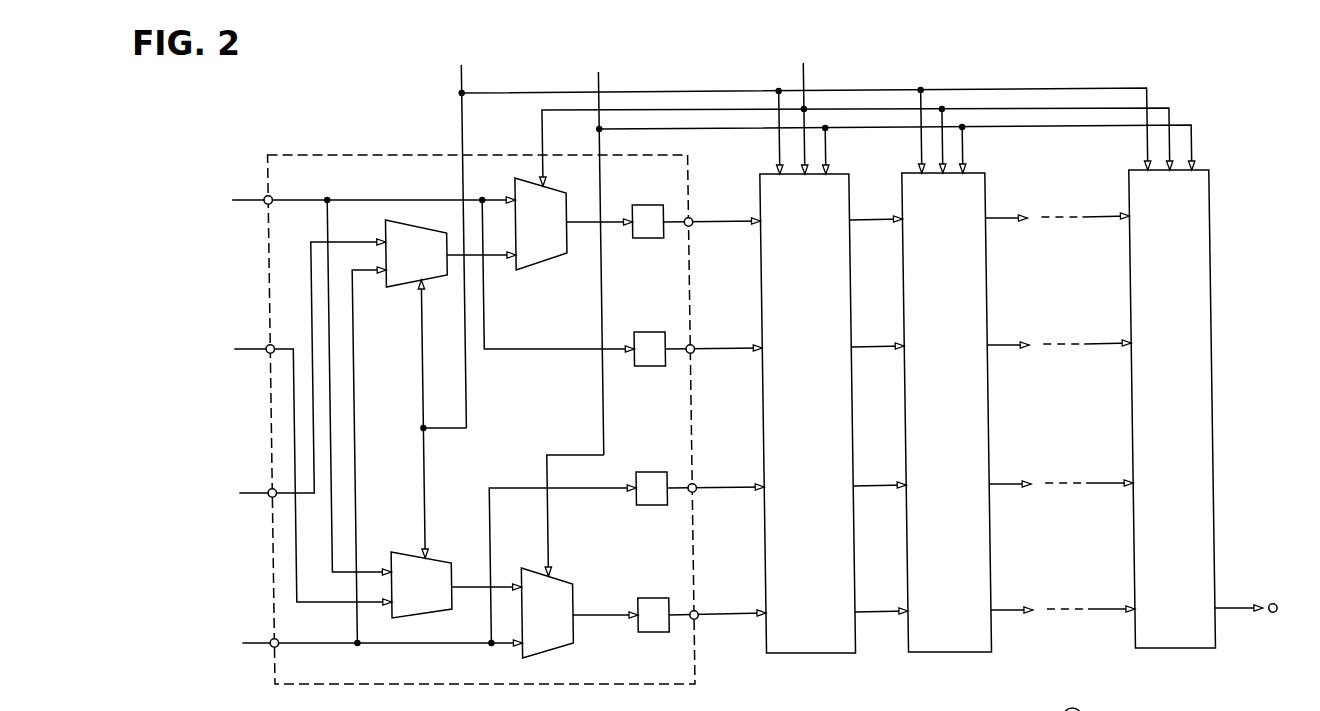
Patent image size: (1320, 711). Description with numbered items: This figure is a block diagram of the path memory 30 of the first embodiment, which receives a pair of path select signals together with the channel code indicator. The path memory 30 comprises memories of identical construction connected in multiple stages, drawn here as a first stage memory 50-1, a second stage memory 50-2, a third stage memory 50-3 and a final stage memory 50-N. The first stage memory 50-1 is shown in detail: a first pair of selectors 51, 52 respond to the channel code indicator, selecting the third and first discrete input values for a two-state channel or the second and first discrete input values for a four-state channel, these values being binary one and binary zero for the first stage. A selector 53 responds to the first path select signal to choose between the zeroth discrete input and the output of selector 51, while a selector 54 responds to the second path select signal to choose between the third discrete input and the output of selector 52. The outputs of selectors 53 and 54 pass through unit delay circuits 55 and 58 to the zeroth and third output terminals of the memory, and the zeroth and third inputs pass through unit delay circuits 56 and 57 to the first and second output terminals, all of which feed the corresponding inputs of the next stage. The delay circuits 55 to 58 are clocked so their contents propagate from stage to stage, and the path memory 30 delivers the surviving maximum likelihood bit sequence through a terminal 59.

The path memory 30 is at (719, 364).
The first stage memory 50-1 is at (483, 684).
The second stage memory 50-2 is at (801, 653).
The third stage memory 50-3 is at (958, 652).
The N-th stage memory 50-N is at (1153, 648).
The selector 51 is at (400, 287).
The selector 52 is at (438, 561).
The selector 53 is at (545, 263).
The selector 54 is at (570, 600).
The unit delay circuit 55 is at (643, 205).
The unit delay circuit 56 is at (643, 332).
The unit delay circuit 57 is at (642, 472).
The unit delay circuit 58 is at (640, 598).
The output terminal 59 is at (1267, 604).